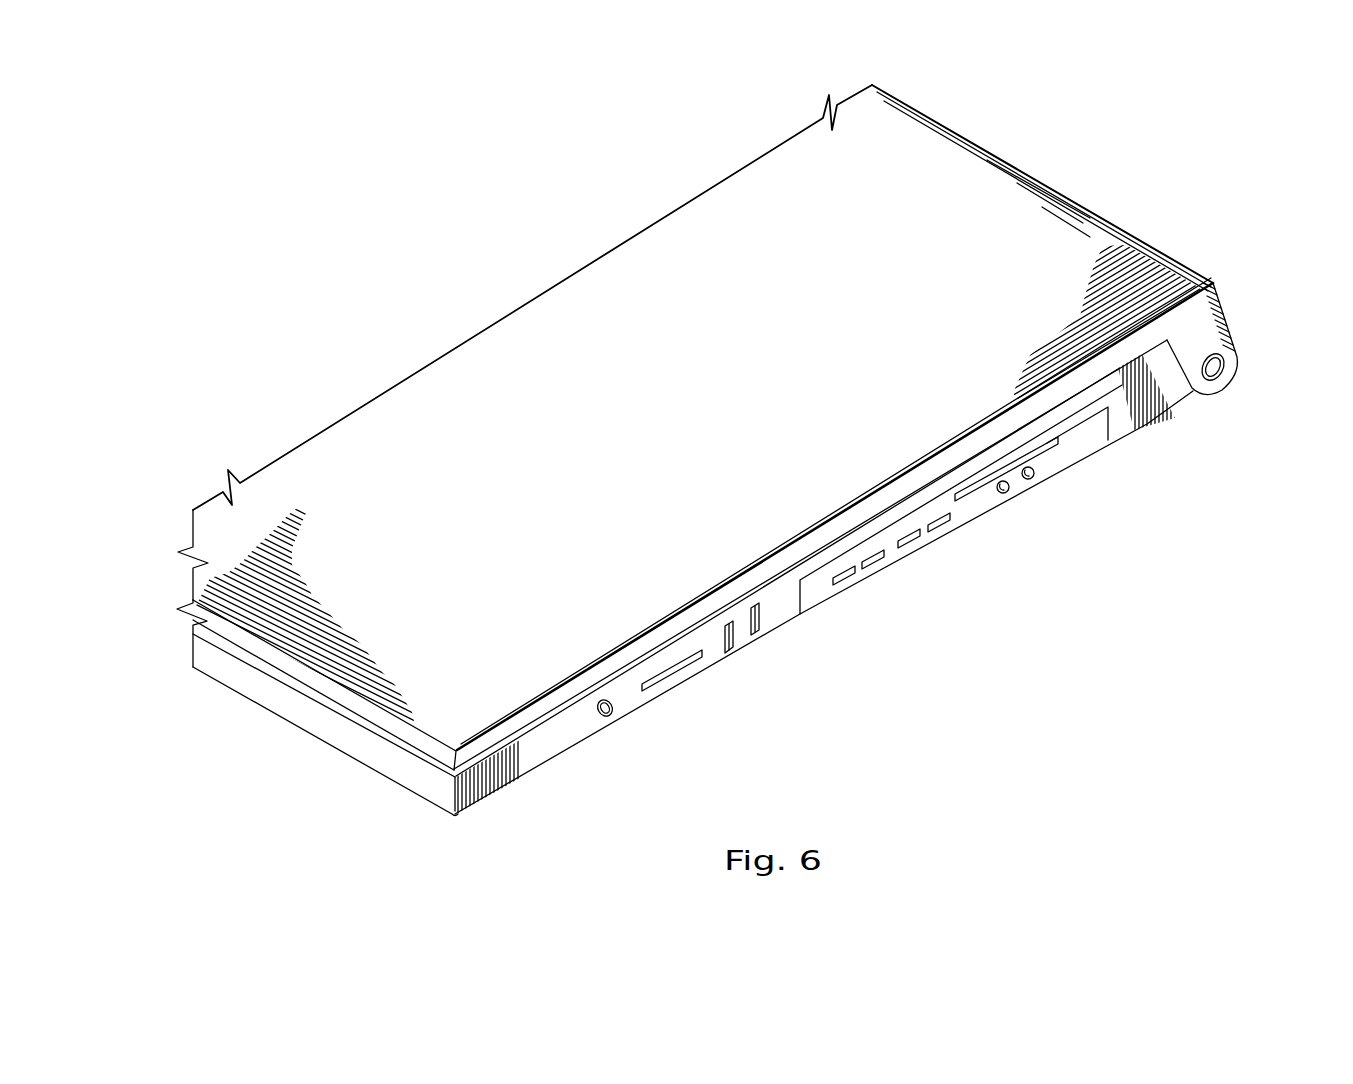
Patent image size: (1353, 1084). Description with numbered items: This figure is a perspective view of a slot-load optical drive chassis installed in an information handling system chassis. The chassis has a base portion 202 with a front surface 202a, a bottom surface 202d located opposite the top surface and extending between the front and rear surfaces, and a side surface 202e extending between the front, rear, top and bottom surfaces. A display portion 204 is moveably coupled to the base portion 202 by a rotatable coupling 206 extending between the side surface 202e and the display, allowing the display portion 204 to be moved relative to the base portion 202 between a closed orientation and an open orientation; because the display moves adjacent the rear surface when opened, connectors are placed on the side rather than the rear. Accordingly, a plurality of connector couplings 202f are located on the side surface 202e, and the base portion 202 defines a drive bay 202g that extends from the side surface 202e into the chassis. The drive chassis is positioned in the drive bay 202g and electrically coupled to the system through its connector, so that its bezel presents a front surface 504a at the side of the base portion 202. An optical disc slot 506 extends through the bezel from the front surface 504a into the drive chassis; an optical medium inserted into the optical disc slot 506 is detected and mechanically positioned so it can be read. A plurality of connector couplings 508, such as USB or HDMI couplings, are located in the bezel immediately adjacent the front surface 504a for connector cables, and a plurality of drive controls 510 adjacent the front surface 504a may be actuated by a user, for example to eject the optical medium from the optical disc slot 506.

The base portion 202 is at (419, 800).
The front surface 202a is at (330, 743).
The bottom surface 202d is at (498, 797).
The side surface 202e is at (555, 753).
The connector couplings 202f is at (606, 698).
The drive bay 202g is at (814, 614).
The display portion 204 is at (681, 411).
The rotatable coupling 206 is at (1226, 372).
The front surface 504a is at (1085, 440).
The optical disc slot 506 is at (967, 492).
The connector couplings 508 is at (843, 567).
The drive controls 510 is at (1012, 492).